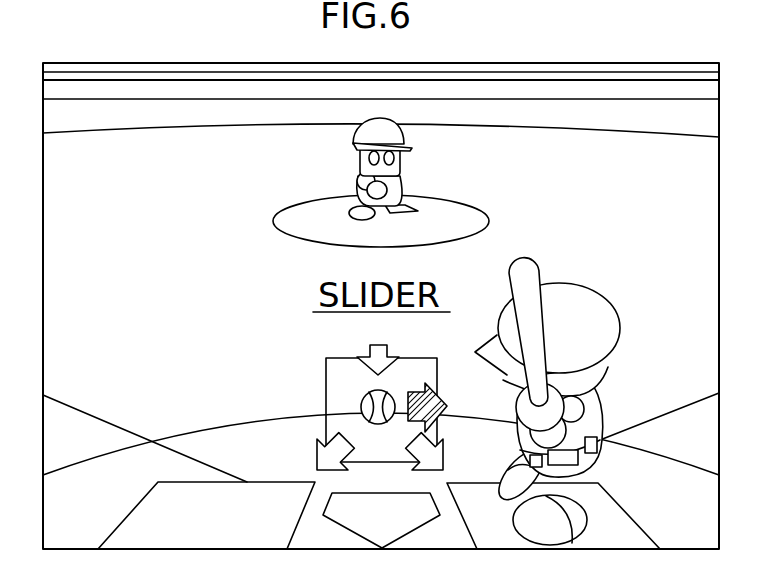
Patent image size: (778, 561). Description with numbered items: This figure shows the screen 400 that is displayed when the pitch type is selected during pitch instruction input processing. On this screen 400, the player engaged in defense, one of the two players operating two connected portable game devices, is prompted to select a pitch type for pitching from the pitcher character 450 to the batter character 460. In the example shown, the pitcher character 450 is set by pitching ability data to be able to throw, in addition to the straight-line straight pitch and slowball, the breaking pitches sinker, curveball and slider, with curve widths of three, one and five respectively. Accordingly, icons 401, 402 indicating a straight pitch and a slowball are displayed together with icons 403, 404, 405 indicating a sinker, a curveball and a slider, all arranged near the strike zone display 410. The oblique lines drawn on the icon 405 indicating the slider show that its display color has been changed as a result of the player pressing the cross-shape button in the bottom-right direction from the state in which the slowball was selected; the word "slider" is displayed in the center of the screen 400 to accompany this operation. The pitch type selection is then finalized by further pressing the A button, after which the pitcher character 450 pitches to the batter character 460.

The screen 400 is at (598, 63).
The icon indicating a straight pitch 401 is at (366, 356).
The icon indicating a slowball 402 is at (362, 398).
The icon indicating a sinker 403 is at (317, 452).
The icon indicating a curveball 404 is at (443, 458).
The icon indicating a slider 405 is at (444, 400).
The strike zone display 410 is at (413, 357).
The pitcher character 450 is at (407, 176).
The batter character 460 is at (593, 293).